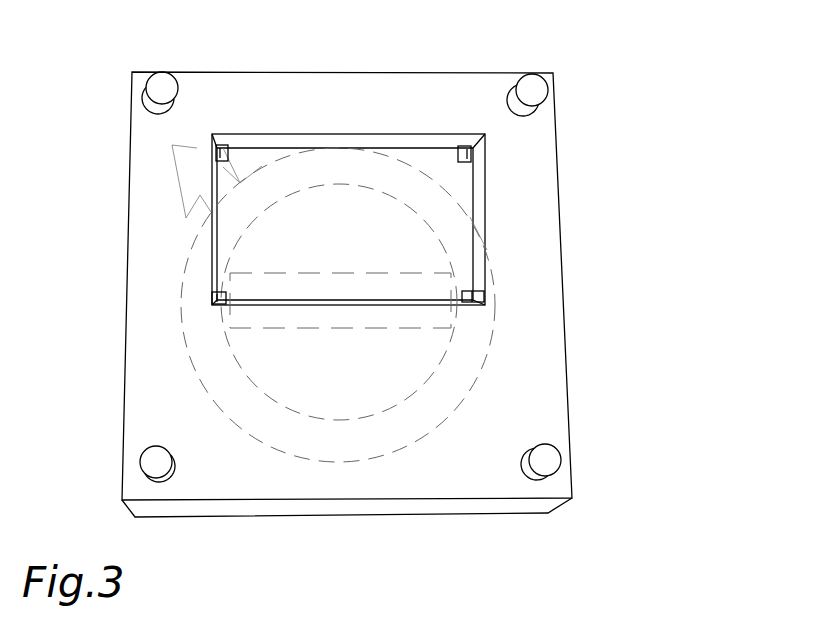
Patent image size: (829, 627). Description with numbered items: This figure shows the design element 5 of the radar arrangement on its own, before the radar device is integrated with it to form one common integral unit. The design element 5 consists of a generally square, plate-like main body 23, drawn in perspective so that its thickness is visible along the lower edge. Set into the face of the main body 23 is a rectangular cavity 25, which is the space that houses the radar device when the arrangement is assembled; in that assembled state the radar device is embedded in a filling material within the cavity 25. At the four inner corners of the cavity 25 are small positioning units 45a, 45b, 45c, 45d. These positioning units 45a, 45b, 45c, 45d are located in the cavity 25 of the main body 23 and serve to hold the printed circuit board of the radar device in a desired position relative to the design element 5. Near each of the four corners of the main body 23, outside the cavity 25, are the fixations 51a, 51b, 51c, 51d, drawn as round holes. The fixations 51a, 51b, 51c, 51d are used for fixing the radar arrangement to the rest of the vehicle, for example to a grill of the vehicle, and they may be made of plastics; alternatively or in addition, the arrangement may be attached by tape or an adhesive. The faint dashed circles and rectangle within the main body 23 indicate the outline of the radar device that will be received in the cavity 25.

The design element 5 is at (682, 97).
The main body 23 is at (523, 227).
The cavity 25 is at (458, 190).
The positioning unit 45a is at (221, 148).
The positioning unit 45b is at (466, 147).
The positioning unit 45c is at (215, 297).
The positioning unit 45d is at (486, 298).
The fixation 51a is at (160, 89).
The fixation 51b is at (536, 88).
The fixation 51c is at (148, 462).
The fixation 51d is at (548, 462).